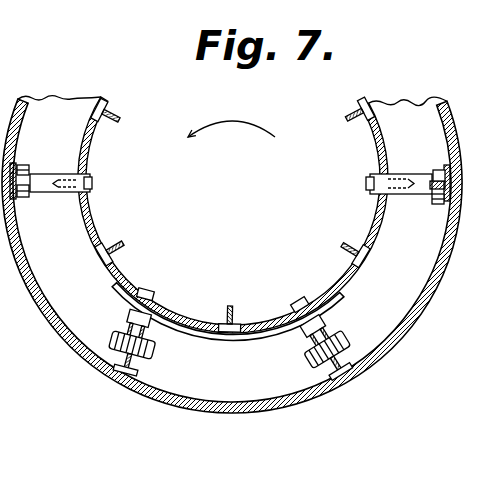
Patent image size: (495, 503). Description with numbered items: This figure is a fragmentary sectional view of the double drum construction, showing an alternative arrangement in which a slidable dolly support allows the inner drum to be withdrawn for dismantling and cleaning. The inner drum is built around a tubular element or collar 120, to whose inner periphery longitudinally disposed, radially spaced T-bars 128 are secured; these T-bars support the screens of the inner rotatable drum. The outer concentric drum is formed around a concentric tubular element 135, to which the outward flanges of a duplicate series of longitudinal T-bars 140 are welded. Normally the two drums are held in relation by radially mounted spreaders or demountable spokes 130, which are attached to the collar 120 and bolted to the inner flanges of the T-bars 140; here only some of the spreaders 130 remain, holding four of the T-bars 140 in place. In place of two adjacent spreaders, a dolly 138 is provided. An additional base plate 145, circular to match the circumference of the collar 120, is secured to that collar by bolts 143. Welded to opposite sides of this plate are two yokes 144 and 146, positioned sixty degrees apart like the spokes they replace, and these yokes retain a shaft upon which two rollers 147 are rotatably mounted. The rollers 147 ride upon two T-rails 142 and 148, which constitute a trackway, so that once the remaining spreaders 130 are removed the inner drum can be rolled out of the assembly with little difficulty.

The tubular element or collar 120 is at (380, 162).
The T-bars 128 is at (353, 244).
The spreaders or demountable spokes 130 is at (42, 193).
The concentric tubular element 135 is at (212, 412).
The dolly 138 is at (126, 320).
The T-bars 140 is at (14, 166).
The T-rail 142 is at (136, 376).
The bolts 143 is at (304, 300).
The yoke 144 is at (344, 335).
The base plate 145 is at (228, 340).
The yoke 146 is at (156, 340).
The rollers 147 is at (326, 325).
The T-rail 148 is at (340, 364).